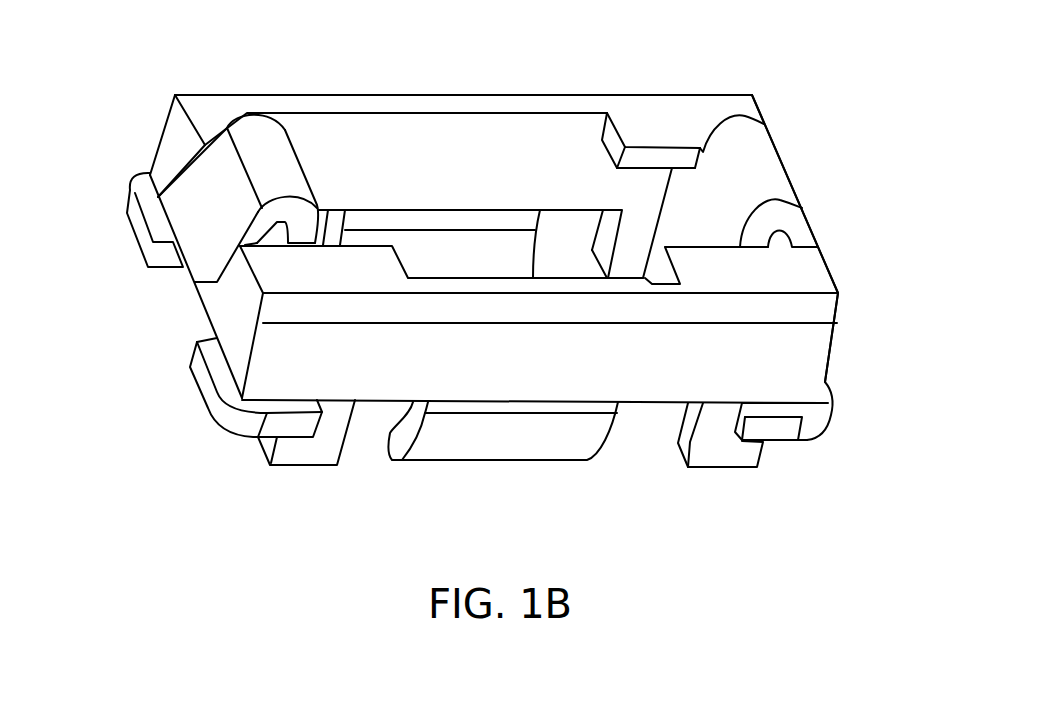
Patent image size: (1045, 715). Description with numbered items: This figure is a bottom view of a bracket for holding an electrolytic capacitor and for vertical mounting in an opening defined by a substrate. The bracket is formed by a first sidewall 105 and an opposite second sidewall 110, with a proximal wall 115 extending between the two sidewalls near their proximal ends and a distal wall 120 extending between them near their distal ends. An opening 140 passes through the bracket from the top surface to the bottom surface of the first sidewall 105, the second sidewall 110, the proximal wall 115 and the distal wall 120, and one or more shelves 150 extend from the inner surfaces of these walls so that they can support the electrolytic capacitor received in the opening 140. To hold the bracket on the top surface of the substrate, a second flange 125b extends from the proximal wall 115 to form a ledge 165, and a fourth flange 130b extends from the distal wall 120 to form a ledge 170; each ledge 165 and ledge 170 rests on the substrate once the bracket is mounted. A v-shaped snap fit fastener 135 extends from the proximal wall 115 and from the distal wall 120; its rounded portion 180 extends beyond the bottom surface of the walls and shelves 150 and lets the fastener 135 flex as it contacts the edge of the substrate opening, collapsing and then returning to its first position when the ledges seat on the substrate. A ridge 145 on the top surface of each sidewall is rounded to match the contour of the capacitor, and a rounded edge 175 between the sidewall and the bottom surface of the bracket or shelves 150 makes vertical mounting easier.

The first sidewall 105 is at (303, 466).
The second sidewall 110 is at (395, 94).
The proximal wall 115 is at (210, 323).
The distal wall 120 is at (828, 263).
The second flange 125b is at (197, 386).
The fourth flange 130b is at (831, 414).
The fastener 135 is at (785, 168).
The opening 140 is at (518, 113).
The ridge 145 is at (421, 461).
The shelf 150 is at (653, 117).
The ledge 165 is at (130, 225).
The ledge 170 is at (781, 418).
The rounded edge 175 is at (843, 303).
The rounded portion 180 is at (257, 116).